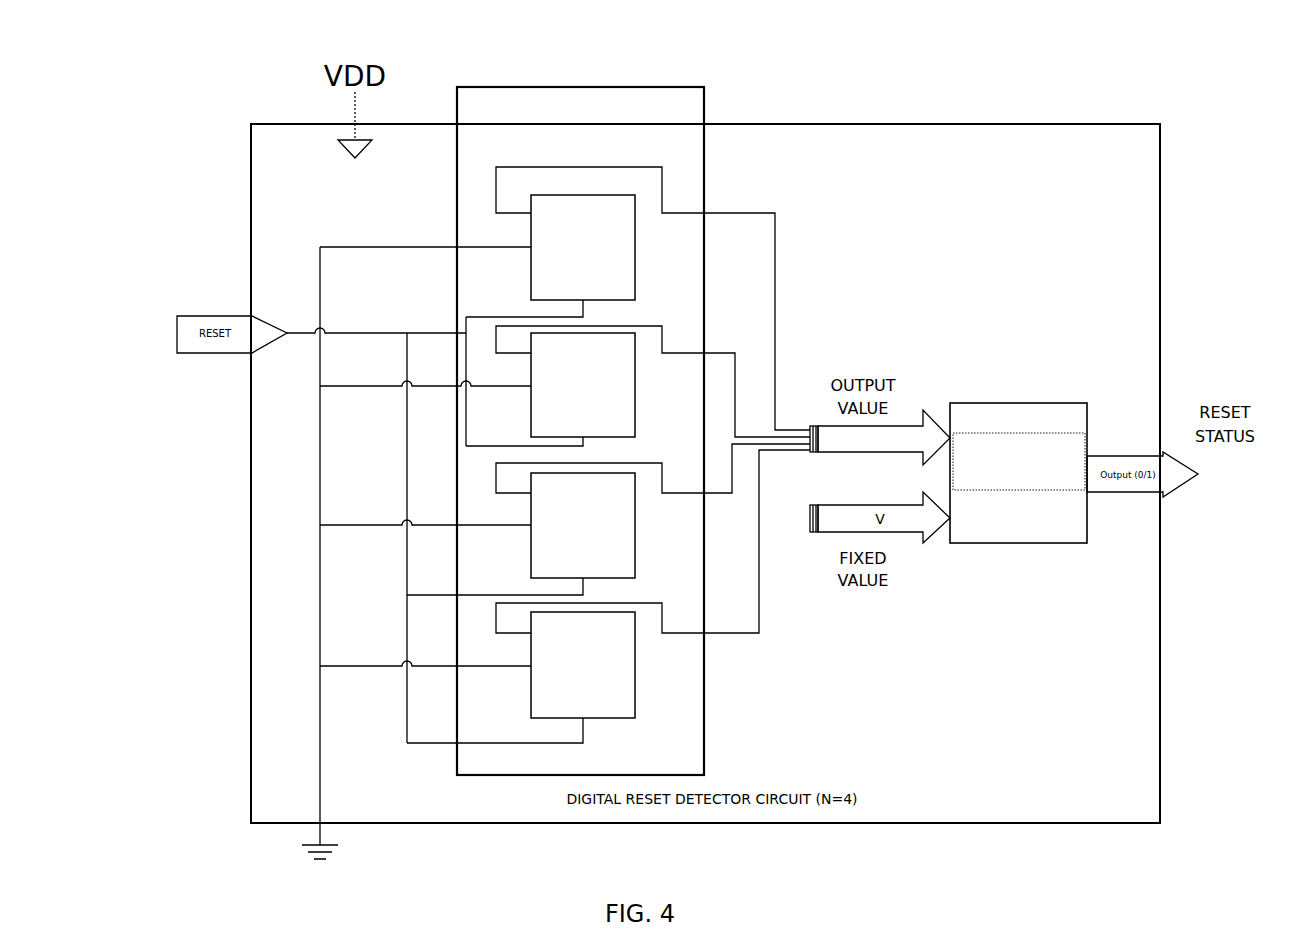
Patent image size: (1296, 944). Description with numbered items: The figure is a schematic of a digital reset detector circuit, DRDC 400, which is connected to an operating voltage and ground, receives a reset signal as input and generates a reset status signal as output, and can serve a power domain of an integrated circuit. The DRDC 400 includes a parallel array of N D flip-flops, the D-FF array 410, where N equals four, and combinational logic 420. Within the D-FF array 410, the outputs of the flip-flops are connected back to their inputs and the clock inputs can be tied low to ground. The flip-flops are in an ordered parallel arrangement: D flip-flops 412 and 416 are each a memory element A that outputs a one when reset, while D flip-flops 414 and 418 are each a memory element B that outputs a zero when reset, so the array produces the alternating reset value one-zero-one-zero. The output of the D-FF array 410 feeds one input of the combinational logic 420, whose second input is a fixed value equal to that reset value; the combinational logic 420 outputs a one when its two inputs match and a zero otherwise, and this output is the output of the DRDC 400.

The digital reset detector circuit 400 is at (1124, 104).
The D-FF array 410 is at (652, 115).
The D flip-flop 412 is at (583, 262).
The D flip-flop 414 is at (583, 400).
The D flip-flop 416 is at (583, 540).
The D flip-flop 418 is at (583, 680).
The combinational logic 420 is at (1002, 522).